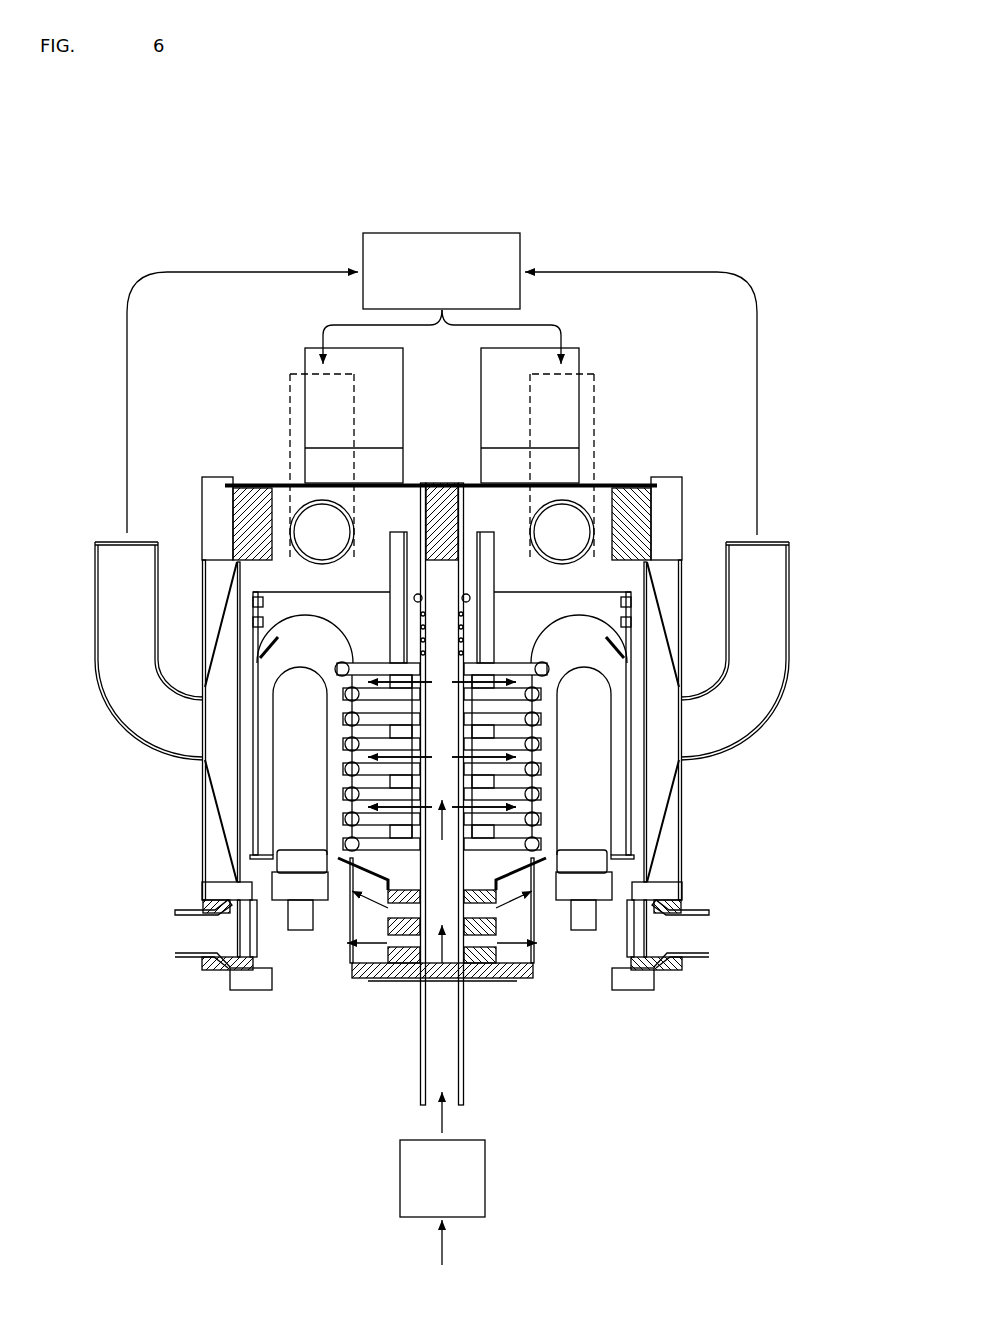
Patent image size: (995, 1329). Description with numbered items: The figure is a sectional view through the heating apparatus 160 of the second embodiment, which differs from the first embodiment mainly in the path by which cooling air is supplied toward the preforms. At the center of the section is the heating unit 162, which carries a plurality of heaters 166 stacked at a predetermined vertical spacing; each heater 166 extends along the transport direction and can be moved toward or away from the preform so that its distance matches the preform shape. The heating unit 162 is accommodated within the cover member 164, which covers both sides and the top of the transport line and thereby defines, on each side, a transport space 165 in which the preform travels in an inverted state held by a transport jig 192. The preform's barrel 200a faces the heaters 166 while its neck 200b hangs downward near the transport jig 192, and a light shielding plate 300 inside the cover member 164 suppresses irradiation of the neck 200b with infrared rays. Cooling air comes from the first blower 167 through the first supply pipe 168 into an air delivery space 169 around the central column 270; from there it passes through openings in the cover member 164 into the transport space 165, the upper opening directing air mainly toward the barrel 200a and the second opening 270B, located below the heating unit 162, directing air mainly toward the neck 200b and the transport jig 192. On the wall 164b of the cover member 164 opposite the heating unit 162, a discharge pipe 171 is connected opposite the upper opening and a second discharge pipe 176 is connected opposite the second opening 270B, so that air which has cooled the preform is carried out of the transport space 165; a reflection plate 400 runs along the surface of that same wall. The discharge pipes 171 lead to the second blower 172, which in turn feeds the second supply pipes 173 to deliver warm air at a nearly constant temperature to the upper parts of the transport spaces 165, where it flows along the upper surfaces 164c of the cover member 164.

The heating apparatus 160 is at (736, 164).
The second blower 172 is at (448, 248).
The cover member 164 is at (442, 518).
The upper surface 164c is at (300, 483).
The wall 164b is at (225, 848).
The second supply pipe 173 is at (308, 530).
The shaft 270 is at (427, 645).
The reflection plate 400 is at (255, 765).
The barrel 200a is at (600, 730).
The neck 200b is at (598, 886).
The transport space 165 is at (260, 805).
The discharge pipe 171 is at (137, 705).
The transport jig 192 is at (600, 905).
The light shielding plate 300 is at (340, 860).
The air delivery space 169 is at (435, 898).
The second opening 270B is at (418, 935).
The heater 166 is at (588, 947).
The heating unit 162 is at (543, 858).
The first supply pipe 168 is at (443, 1070).
The first blower 167 is at (468, 1183).
The second discharge pipe 176 is at (190, 947).